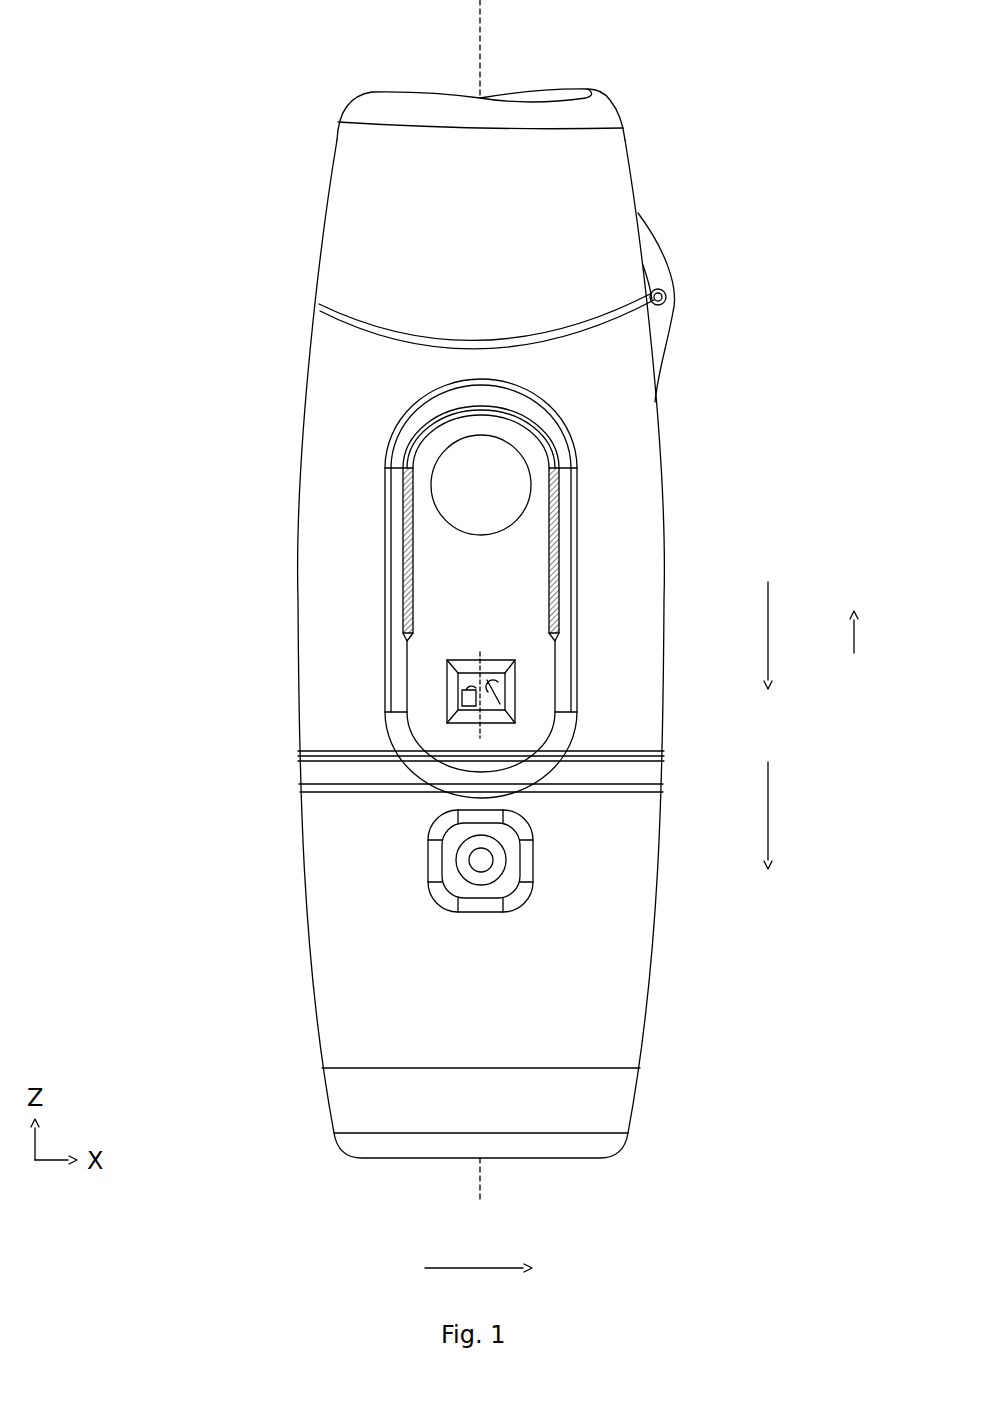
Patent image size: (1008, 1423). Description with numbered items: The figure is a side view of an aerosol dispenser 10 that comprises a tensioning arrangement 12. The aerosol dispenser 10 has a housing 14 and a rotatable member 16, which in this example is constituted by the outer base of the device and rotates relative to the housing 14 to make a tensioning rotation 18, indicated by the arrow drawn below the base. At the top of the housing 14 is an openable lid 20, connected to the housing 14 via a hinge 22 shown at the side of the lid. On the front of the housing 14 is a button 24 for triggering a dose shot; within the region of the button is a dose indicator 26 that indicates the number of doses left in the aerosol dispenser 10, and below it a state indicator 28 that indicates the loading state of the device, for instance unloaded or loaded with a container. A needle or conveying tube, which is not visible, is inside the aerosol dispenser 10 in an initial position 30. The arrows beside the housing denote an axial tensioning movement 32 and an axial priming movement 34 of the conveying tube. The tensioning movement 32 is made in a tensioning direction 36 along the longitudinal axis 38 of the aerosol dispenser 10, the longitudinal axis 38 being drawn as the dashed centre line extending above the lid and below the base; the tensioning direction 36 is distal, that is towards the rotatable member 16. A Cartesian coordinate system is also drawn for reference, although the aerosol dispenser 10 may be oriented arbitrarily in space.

The aerosol dispenser 10 is at (153, 50).
The tensioning arrangement 12 is at (155, 434).
The housing 14 is at (481, 672).
The rotatable member 16 is at (481, 958).
The tensioning rotation 18 is at (474, 1251).
The openable lid 20 is at (506, 262).
The hinge 22 is at (666, 293).
The button 24 is at (481, 588).
The dose indicator 26 is at (450, 690).
The state indicator 28 is at (432, 858).
The initial position 30 is at (132, 642).
The axial tensioning movement 32 is at (790, 631).
The axial priming movement 34 is at (875, 636).
The tensioning direction 36 is at (790, 811).
The longitudinal axis 38 is at (481, 38).